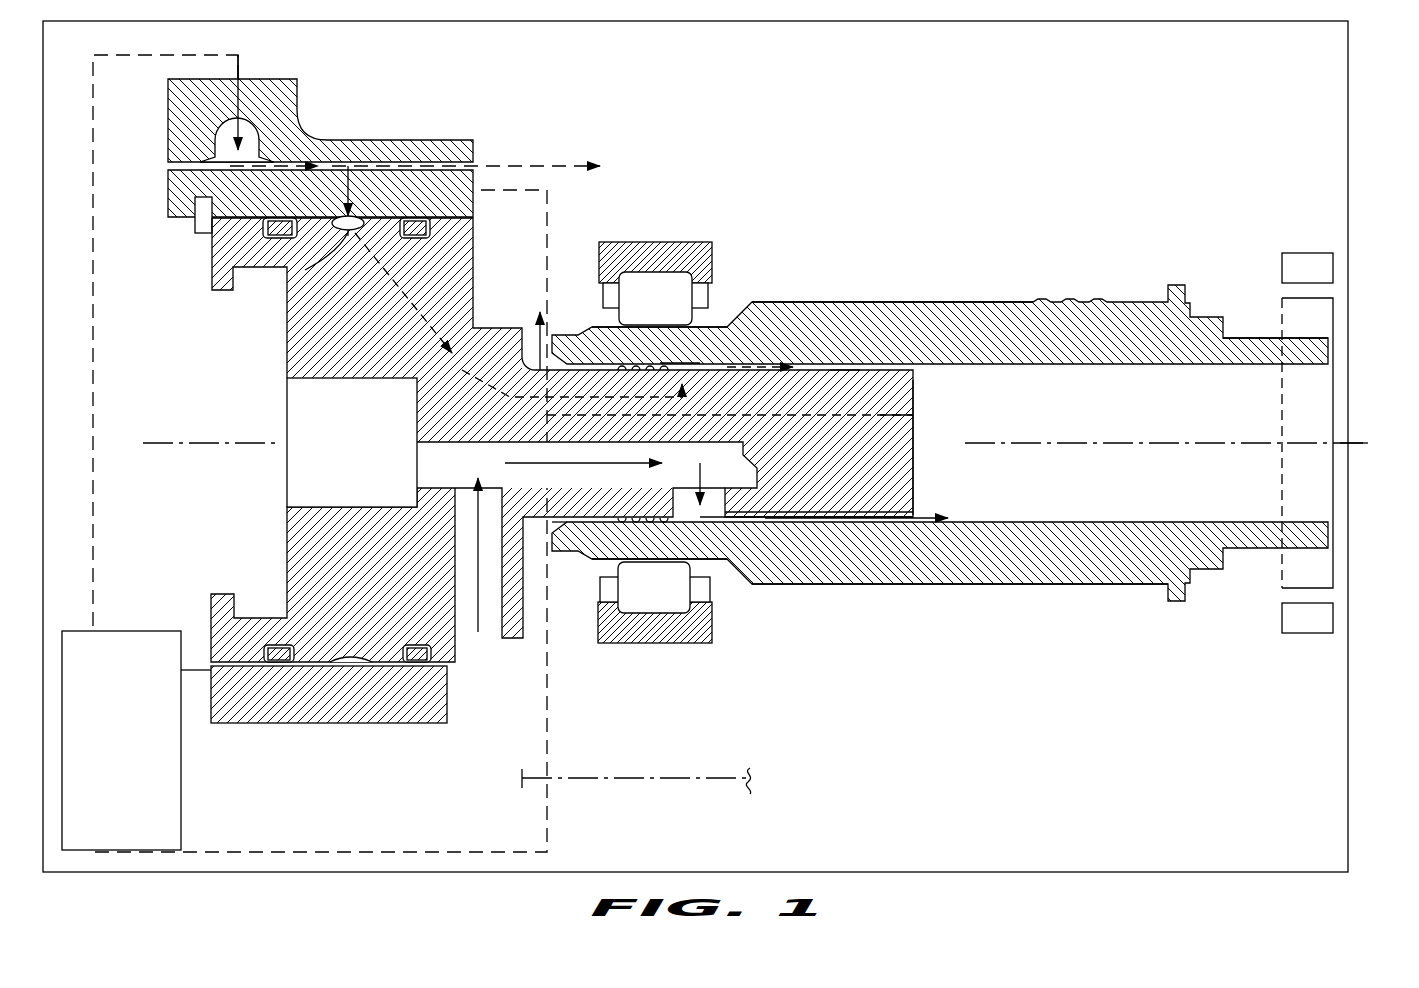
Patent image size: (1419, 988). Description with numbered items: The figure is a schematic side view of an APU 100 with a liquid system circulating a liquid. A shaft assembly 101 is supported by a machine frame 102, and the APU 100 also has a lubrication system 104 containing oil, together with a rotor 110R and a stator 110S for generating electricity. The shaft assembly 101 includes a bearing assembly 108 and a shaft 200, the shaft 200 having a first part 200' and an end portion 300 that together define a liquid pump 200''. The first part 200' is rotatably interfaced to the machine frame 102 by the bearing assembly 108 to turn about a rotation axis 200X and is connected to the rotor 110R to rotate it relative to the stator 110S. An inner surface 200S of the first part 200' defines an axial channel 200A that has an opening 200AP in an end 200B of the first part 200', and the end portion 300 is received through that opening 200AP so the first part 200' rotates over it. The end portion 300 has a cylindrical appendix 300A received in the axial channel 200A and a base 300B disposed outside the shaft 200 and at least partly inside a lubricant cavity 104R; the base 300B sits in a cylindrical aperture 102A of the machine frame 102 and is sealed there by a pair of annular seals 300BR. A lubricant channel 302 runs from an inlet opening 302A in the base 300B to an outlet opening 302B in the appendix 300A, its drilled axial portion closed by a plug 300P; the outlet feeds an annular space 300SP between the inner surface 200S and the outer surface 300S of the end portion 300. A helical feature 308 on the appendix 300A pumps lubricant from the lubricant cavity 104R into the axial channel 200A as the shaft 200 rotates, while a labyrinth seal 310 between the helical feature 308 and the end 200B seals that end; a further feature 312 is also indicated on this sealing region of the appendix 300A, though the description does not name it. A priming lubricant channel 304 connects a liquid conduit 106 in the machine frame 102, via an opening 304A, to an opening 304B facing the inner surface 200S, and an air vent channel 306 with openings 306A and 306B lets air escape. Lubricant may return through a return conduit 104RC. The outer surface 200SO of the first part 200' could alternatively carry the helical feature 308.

The APU 100 is at (1327, 61).
The shaft assembly 101 is at (1205, 180).
The machine frame 102 is at (420, 198).
The aperture 102A is at (184, 222).
The lubrication system 104 is at (140, 753).
The lubricant cavity 104R is at (262, 826).
The return conduit 104RC is at (704, 775).
The liquid conduit 106 is at (240, 94).
The bearing assembly 108 is at (660, 295).
The stator 110S is at (1310, 268).
The rotor 110R is at (1307, 472).
The shaft 200 is at (940, 380).
The first part of the shaft 200' is at (960, 599).
The liquid pump 200'' is at (920, 352).
The axial channel 200A is at (1202, 412).
The opening 200AP is at (538, 538).
The end of the first part of the shaft 200B is at (680, 608).
The inner surface 200S is at (1163, 512).
The outer surface of the first part of the shaft 200SO is at (612, 330).
The rotation axis 200X is at (1366, 440).
The end portion 300 is at (373, 582).
The cylindrical appendix 300A is at (914, 485).
The base 300B is at (340, 343).
The annular seals 300BR is at (415, 663).
The plug 300P is at (384, 455).
The outer surface of the end portion 300S is at (765, 535).
The annular space 300SP is at (778, 524).
The lubricant channel 302 is at (668, 545).
The opening 302A is at (478, 660).
The opening 302B is at (720, 535).
The priming lubricant channel 304 is at (400, 288).
The opening 304A is at (330, 263).
The opening 304B is at (780, 365).
The air vent channel 306 is at (820, 420).
The opening 306A is at (916, 404).
The opening 306B is at (538, 372).
The helical feature 308 is at (843, 372).
The annular seal 310 is at (675, 362).
The seal gap 312 is at (835, 522).